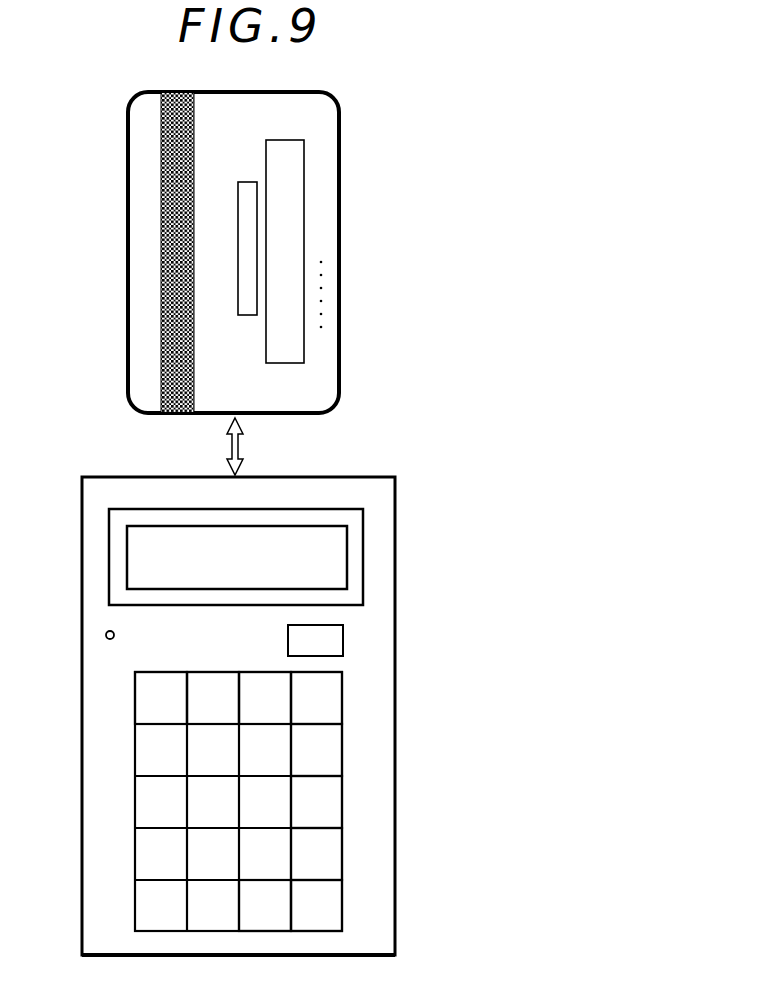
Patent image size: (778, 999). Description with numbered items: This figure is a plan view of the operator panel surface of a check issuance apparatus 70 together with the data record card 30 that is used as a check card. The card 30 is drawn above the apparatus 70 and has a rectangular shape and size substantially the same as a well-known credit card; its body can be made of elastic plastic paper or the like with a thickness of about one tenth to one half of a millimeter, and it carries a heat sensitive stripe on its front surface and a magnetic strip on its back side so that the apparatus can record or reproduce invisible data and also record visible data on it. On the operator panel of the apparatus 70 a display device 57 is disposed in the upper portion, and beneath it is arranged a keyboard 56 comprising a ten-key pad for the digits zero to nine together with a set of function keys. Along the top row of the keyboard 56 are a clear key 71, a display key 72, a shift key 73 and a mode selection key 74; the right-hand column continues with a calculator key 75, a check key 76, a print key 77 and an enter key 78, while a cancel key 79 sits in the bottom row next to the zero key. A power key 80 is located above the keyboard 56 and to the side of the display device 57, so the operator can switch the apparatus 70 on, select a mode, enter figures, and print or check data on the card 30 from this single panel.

The data record card 30 is at (340, 237).
The keyboard 56 is at (135, 800).
The display device 57 is at (337, 558).
The check issuance apparatus 70 is at (80, 533).
The clear key 71 is at (135, 705).
The display key 72 is at (211, 680).
The shift key 73 is at (258, 680).
The mode selection key 74 is at (338, 712).
The calculator key 75 is at (337, 762).
The check key 76 is at (337, 815).
The print key 77 is at (340, 866).
The enter key 78 is at (340, 920).
The cancel key 79 is at (266, 923).
The power key 80 is at (343, 648).